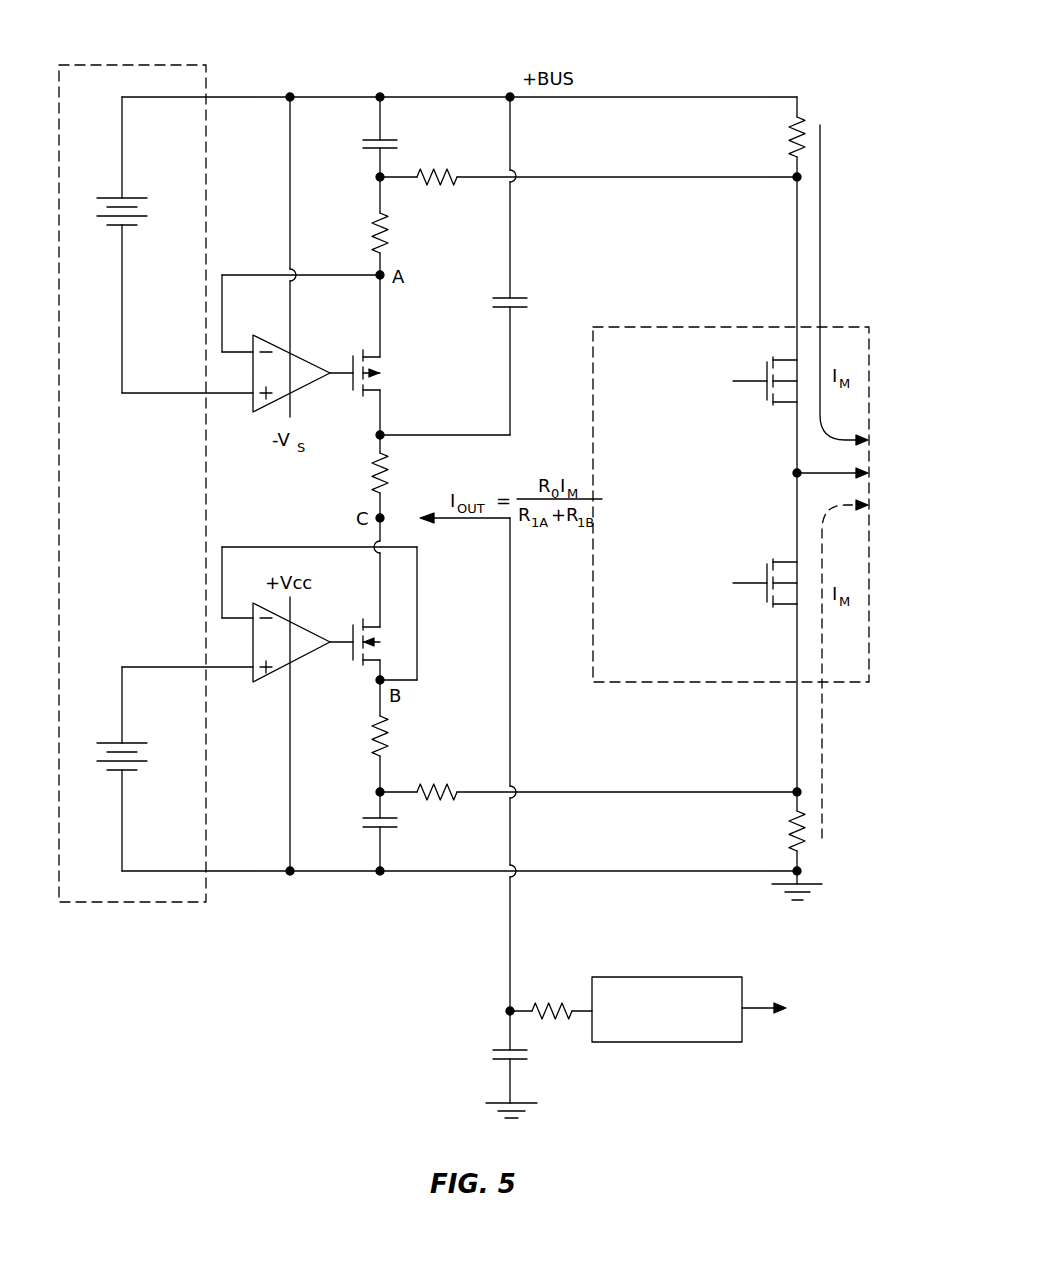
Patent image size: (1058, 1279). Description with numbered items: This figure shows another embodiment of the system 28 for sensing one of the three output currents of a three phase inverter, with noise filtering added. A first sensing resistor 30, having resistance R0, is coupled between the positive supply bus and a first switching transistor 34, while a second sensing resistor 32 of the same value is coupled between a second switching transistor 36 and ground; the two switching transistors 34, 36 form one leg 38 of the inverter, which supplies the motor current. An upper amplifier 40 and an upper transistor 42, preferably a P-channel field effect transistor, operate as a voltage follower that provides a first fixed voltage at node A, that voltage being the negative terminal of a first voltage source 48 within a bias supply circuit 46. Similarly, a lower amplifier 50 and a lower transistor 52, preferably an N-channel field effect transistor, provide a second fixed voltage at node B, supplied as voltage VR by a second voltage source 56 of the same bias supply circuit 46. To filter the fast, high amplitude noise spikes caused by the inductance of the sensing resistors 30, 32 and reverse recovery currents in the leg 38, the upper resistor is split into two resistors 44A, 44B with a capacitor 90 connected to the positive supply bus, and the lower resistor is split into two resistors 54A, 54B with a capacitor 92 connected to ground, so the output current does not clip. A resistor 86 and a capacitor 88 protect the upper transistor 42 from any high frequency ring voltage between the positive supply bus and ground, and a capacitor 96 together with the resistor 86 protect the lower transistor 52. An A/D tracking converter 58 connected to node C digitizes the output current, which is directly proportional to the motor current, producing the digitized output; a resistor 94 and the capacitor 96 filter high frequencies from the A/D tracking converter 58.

The system 28 is at (648, 36).
The first sensing resistor 30 is at (792, 127).
The second sensing resistor 32 is at (792, 822).
The first switching transistor 34 is at (766, 401).
The second switching transistor 36 is at (766, 603).
The leg 38 is at (651, 663).
The upper amplifier 40 is at (307, 361).
The upper transistor 42 is at (356, 385).
The resistor 44A is at (441, 170).
The resistor 44B is at (389, 245).
The bias supply circuit 46 is at (106, 116).
The first voltage source 48 is at (115, 196).
The lower amplifier 50 is at (306, 655).
The lower transistor 52 is at (355, 634).
The resistor 54A is at (446, 801).
The resistor 54B is at (389, 722).
The second voltage source 56 is at (115, 741).
The A/D tracking converter 58 is at (698, 977).
The resistor 86 is at (375, 481).
The capacitor 88 is at (518, 298).
The capacitor 90 is at (385, 140).
The capacitor 92 is at (386, 832).
The resistor 94 is at (550, 1020).
The capacitor 96 is at (518, 1062).